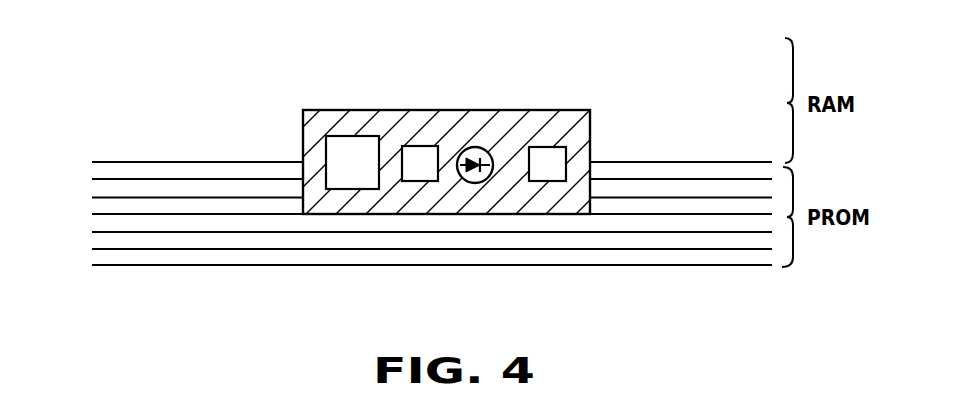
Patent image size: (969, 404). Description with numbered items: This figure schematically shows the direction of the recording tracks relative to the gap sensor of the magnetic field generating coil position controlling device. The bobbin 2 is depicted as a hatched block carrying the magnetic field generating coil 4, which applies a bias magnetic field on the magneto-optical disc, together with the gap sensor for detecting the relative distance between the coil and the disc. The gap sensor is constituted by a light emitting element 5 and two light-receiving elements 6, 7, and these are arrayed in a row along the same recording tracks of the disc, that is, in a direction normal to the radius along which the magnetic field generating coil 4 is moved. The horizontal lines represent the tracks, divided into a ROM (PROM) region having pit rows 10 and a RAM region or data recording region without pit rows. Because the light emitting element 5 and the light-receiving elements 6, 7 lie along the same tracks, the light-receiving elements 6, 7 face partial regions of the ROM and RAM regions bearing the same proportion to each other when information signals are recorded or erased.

The bobbin 2 is at (312, 140).
The magnetic field generating coil 4 is at (350, 147).
The light emitting element 5 is at (476, 147).
The light-receiving element 6 is at (418, 157).
The light-receiving element 7 is at (549, 156).
The pit rows 10 is at (596, 262).